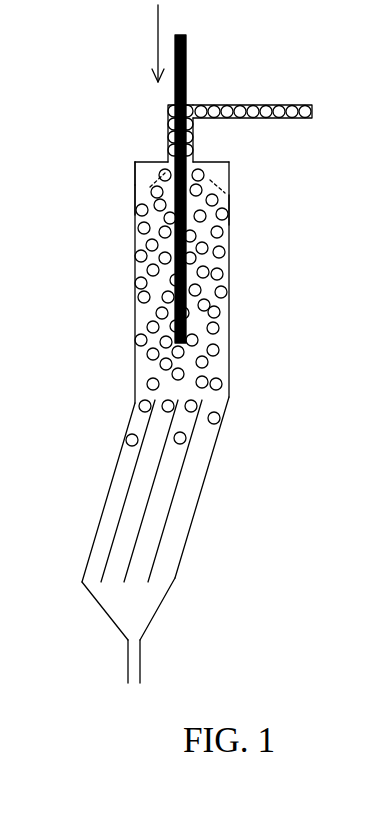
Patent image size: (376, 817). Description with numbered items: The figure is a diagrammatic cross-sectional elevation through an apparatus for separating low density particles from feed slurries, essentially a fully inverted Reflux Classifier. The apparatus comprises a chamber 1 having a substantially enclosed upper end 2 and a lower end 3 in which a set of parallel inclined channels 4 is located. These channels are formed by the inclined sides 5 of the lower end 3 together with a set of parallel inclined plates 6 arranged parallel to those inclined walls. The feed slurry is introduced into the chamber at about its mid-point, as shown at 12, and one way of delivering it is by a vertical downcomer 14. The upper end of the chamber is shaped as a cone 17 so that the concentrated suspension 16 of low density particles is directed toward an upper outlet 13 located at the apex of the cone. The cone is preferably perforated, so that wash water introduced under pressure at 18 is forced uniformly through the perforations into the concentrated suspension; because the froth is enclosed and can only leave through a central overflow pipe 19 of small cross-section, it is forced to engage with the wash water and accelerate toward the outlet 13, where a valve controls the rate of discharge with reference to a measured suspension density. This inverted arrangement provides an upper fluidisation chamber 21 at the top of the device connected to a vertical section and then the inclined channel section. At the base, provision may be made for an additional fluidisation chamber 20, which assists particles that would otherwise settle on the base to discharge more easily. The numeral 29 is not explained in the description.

The chamber 1 is at (230, 266).
The substantially enclosed upper end 2 is at (205, 170).
The lower end 3 is at (270, 418).
The parallel inclined channels 4 is at (128, 476).
The inclined sides 5 is at (125, 443).
The parallel inclined plates 6 is at (157, 556).
The feed slurry introduction point 12 is at (190, 375).
The upper outlet 13 is at (168, 160).
The vertical downcomer 14 is at (190, 47).
The concentrated suspension of low density particles 16 is at (230, 208).
The cone 17 is at (205, 172).
The wash water introduction point 18 is at (150, 190).
The central overflow pipe 19 is at (168, 106).
The additional fluidisation chamber 20 is at (115, 598).
The upper fluidisation chamber 21 is at (135, 173).
The outlet nozzle 29 is at (142, 672).